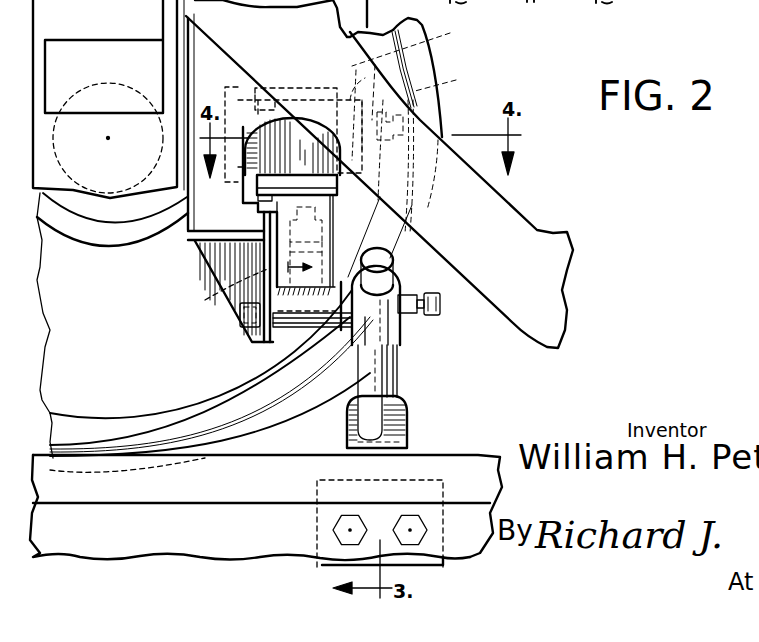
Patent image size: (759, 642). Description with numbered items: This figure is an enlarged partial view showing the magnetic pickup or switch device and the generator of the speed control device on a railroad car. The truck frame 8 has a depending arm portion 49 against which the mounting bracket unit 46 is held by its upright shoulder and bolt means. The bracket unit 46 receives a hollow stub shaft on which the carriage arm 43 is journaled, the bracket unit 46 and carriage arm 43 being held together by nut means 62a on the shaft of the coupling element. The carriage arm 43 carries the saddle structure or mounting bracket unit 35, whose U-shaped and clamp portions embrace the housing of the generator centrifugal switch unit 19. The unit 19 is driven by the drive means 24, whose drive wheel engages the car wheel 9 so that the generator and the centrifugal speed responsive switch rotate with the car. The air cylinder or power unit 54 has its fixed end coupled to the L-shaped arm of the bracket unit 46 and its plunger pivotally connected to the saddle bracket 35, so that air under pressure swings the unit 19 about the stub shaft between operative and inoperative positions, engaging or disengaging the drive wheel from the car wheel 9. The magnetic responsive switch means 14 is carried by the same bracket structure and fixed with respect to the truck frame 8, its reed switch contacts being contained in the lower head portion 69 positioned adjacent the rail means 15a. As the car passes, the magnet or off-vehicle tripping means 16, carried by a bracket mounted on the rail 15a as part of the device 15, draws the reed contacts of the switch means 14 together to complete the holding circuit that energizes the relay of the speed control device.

The truck frame 8 is at (522, 205).
The car wheel 9 is at (435, 62).
The magnetic responsive switch means 14 is at (407, 372).
The device 15 is at (348, 390).
The rail means 15a is at (478, 453).
The magnet or off-vehicle conditioning or tripping means 16 is at (320, 567).
The generator centrifugal switch unit 19 is at (411, 44).
The drive means 24 is at (446, 82).
The saddle structure or mounting bracket unit 35 is at (343, 189).
The carriage arm 43 is at (392, 242).
The mounting bracket unit 46 is at (265, 345).
The depending arm portion 49 is at (200, 263).
The air cylinder or power unit 54 is at (218, 293).
The nut means 62a is at (240, 325).
The head portion 69 is at (404, 422).